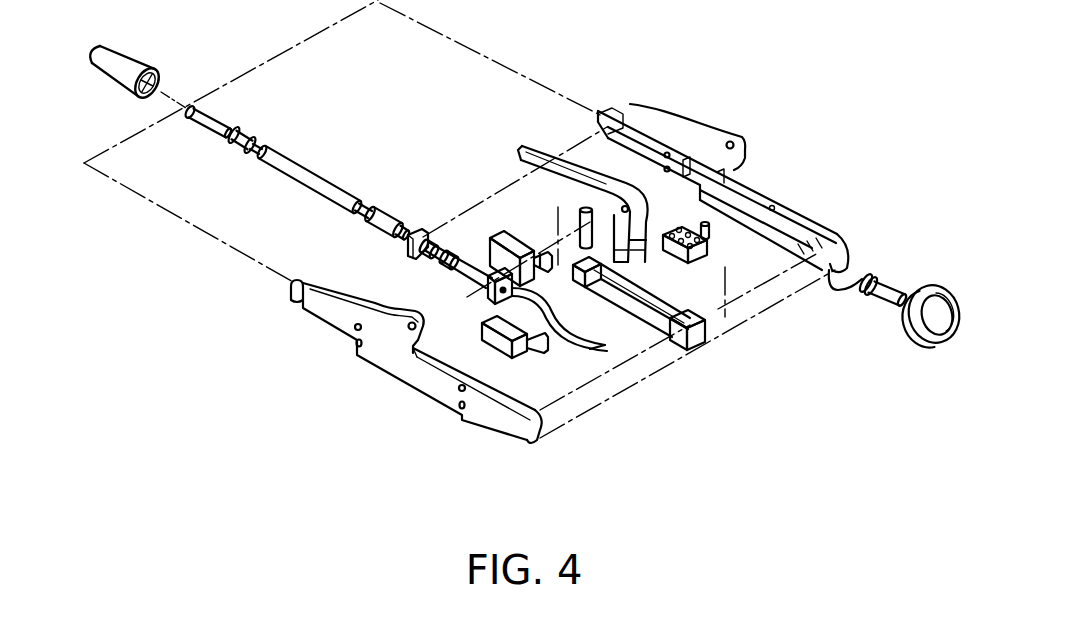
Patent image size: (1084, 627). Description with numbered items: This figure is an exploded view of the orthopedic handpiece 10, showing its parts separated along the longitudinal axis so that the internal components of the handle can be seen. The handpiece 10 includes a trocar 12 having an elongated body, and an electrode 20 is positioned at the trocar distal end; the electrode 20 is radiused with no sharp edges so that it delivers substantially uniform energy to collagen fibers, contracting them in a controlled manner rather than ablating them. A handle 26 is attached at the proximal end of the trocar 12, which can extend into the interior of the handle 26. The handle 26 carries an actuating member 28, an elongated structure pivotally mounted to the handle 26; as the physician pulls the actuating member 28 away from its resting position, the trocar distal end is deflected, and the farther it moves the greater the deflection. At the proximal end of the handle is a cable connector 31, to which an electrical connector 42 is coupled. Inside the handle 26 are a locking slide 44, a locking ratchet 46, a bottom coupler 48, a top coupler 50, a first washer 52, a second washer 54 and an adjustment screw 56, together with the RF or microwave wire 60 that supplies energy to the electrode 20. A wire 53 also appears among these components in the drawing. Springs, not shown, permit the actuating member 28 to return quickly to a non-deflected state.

The handpiece 10 is at (290, 132).
The trocar 12 is at (293, 178).
The electrode 20 is at (201, 118).
The handle 26 is at (738, 151).
The actuating member 28 is at (521, 147).
The cable connector 31 is at (926, 350).
The electrical connector 42 is at (872, 277).
The locking slide 44 is at (706, 345).
The locking ratchet 46 is at (683, 250).
The bottom coupler 48 is at (527, 350).
The top coupler 50 is at (490, 237).
The first washer 52 is at (522, 291).
The cable 53 is at (570, 323).
The second washer 54 is at (408, 256).
The adjustment screw 56 is at (387, 229).
The RF or microwave wire 60 is at (585, 352).